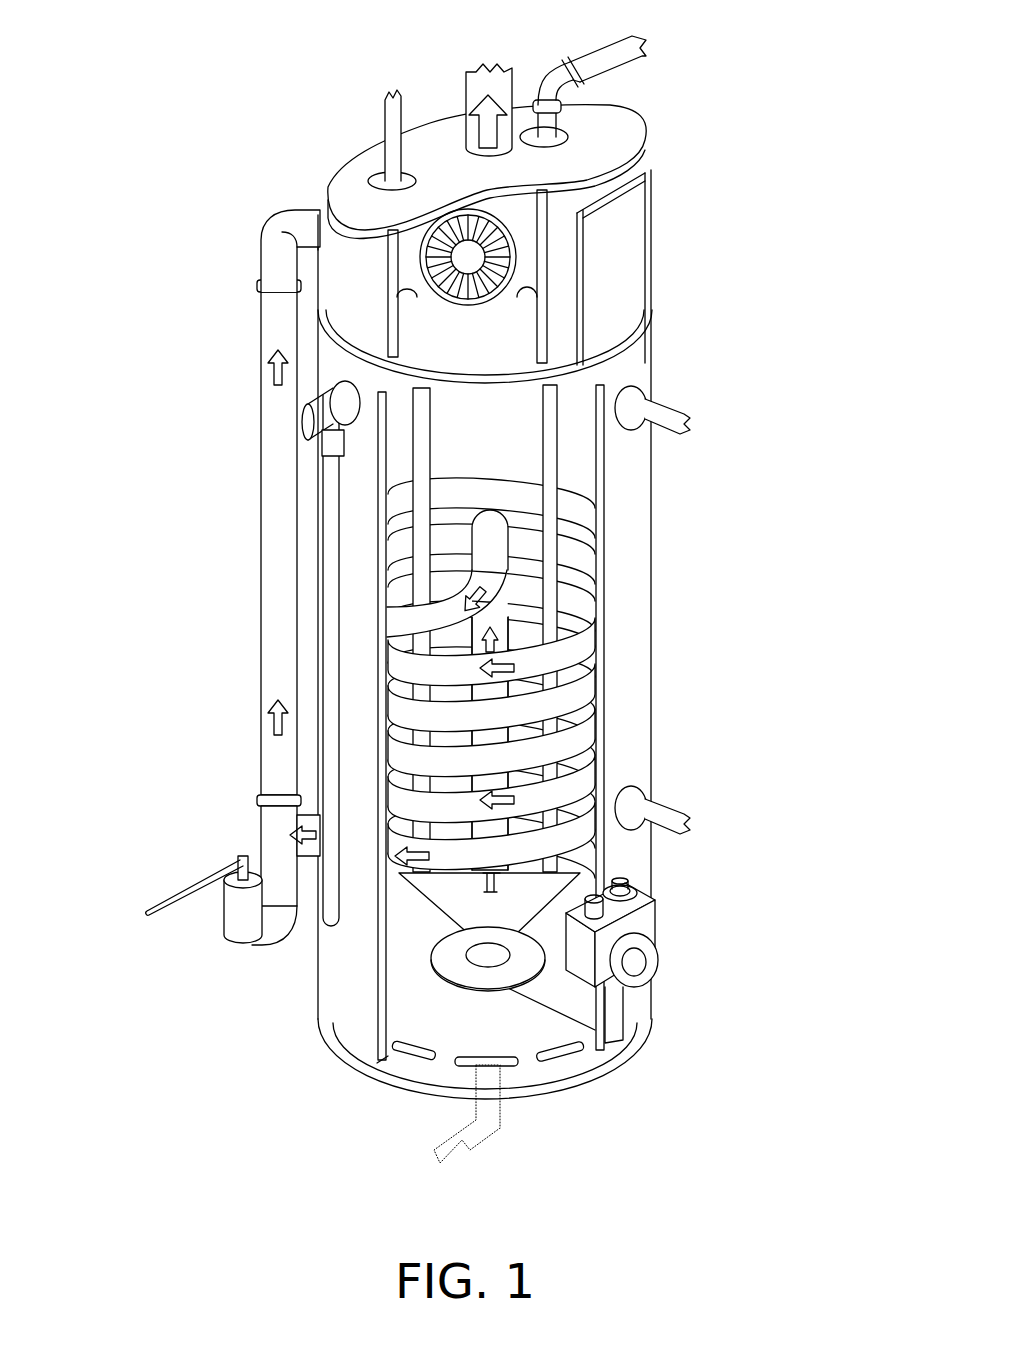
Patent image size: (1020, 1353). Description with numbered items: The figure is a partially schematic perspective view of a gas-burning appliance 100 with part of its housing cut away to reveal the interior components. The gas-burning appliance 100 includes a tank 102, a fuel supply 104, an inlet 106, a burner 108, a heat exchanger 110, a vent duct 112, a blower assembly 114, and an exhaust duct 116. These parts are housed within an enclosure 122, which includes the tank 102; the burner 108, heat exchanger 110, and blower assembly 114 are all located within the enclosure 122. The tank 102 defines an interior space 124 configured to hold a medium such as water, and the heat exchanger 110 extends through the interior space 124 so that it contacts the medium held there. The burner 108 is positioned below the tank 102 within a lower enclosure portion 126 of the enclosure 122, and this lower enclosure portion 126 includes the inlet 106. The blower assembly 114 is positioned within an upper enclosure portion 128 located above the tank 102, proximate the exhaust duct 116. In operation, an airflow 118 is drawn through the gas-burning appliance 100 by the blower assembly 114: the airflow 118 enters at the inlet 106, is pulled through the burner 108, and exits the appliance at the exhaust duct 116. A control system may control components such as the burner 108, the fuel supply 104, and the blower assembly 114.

The gas-burning appliance 100 is at (187, 92).
The tank 102 is at (636, 590).
The fuel supply 104 is at (636, 918).
The inlet 106 is at (418, 1069).
The burner 108 is at (436, 980).
The heat exchanger 110 is at (533, 657).
The vent duct 112 is at (266, 732).
The blower assembly 114 is at (498, 307).
The exhaust duct 116 is at (466, 90).
The airflow 118 is at (643, 125).
The enclosure 122 is at (638, 499).
The interior space 124 is at (463, 452).
The lower enclosure portion 126 is at (556, 886).
The upper enclosure portion 128 is at (338, 270).